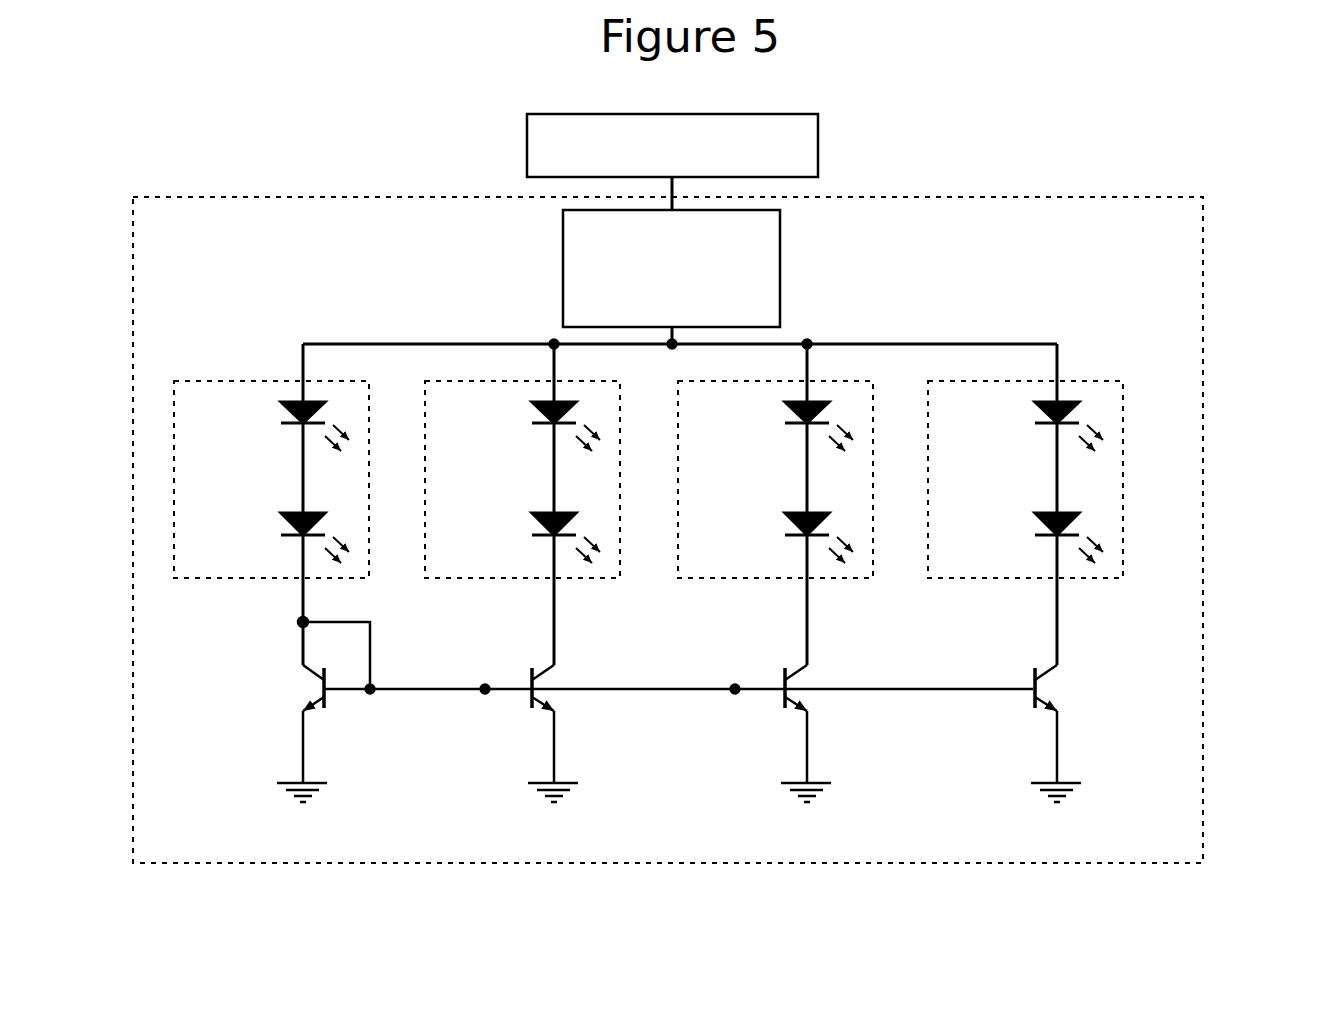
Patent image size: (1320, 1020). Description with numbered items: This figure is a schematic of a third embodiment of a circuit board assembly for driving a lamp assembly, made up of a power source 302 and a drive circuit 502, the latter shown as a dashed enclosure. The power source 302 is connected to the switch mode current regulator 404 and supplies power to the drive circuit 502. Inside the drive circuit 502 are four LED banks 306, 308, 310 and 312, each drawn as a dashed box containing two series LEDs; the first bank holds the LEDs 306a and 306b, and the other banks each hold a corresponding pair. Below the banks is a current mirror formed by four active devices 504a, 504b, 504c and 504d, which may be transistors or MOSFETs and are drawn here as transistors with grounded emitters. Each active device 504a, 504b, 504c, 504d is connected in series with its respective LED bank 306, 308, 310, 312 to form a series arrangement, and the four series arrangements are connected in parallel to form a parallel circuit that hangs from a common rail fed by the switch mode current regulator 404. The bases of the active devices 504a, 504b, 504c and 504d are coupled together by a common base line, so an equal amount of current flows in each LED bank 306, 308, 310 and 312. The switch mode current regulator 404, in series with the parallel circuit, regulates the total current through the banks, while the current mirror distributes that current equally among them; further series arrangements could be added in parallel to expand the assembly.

The power source 302 is at (818, 148).
The switch mode current regulator 404 is at (780, 270).
The drive circuit 502 is at (1203, 560).
The LED bank 306 is at (198, 381).
The LED bank 308 is at (449, 381).
The LED bank 310 is at (702, 381).
The LED bank 312 is at (952, 381).
The LED 306a is at (295, 512).
The LED 306b is at (295, 401).
The active device 504a is at (327, 698).
The active device 504b is at (527, 698).
The active device 504c is at (780, 703).
The active device 504d is at (1030, 703).